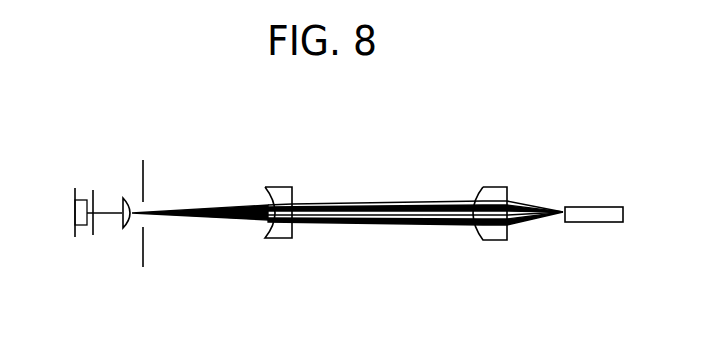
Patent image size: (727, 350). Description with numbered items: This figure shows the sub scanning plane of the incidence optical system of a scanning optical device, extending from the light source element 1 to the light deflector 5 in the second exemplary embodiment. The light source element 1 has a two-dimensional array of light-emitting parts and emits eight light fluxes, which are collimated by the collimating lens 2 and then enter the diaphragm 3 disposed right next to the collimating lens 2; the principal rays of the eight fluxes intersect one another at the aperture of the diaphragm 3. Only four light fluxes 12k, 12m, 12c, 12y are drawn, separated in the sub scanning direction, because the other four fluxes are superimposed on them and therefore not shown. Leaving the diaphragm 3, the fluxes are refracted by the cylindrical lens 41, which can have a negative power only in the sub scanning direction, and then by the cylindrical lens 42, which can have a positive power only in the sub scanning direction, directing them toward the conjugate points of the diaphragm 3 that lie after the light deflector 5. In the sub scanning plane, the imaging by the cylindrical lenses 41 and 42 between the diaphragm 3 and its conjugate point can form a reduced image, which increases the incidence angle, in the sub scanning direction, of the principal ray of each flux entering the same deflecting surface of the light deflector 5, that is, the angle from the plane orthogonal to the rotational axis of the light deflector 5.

The light source element 1 is at (82, 226).
The collimating lens 2 is at (126, 229).
The diaphragm 3 is at (143, 253).
The cylindrical lens 41 is at (272, 239).
The cylindrical lens 42 is at (495, 241).
The light deflector 5 is at (597, 216).
The light flux 12y is at (337, 203).
The light flux 12m is at (412, 206).
The light flux 12k is at (340, 224).
The light flux 12c is at (422, 229).